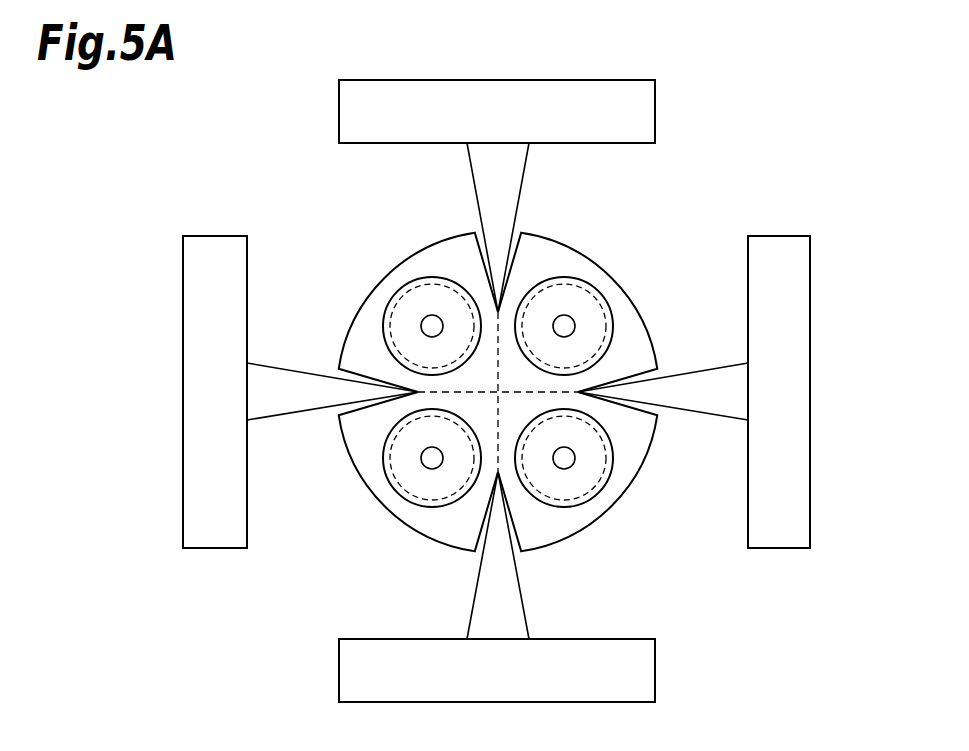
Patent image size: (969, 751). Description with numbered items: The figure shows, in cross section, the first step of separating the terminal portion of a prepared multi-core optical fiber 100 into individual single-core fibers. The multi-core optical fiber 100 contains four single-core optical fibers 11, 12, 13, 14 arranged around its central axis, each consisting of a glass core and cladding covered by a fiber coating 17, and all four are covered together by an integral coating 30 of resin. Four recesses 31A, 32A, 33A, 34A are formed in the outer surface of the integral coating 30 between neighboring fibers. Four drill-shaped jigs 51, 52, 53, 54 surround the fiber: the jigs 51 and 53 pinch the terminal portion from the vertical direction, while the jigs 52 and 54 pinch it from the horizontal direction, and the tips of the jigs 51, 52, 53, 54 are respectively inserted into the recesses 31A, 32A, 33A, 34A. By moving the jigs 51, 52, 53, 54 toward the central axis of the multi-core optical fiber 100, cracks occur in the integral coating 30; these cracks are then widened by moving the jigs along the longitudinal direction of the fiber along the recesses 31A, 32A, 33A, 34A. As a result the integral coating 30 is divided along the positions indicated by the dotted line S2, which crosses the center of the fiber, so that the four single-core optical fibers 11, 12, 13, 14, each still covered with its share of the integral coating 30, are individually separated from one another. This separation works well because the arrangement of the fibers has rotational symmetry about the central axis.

The multi-core optical fiber 100 is at (539, 349).
The integral coating 30 is at (450, 243).
The single-core optical fiber 11 is at (376, 277).
The single-core optical fiber 12 is at (609, 288).
The single-core optical fiber 13 is at (610, 495).
The single-core optical fiber 14 is at (386, 495).
The fiber coating 17 is at (419, 287).
The recess 31A is at (518, 233).
The recess 32A is at (659, 412).
The recess 33A is at (477, 553).
The recess 34A is at (333, 372).
The jig 51 is at (664, 108).
The jig 52 is at (782, 556).
The jig 53 is at (330, 675).
The jig 54 is at (213, 228).
The dotted line S2 is at (573, 392).